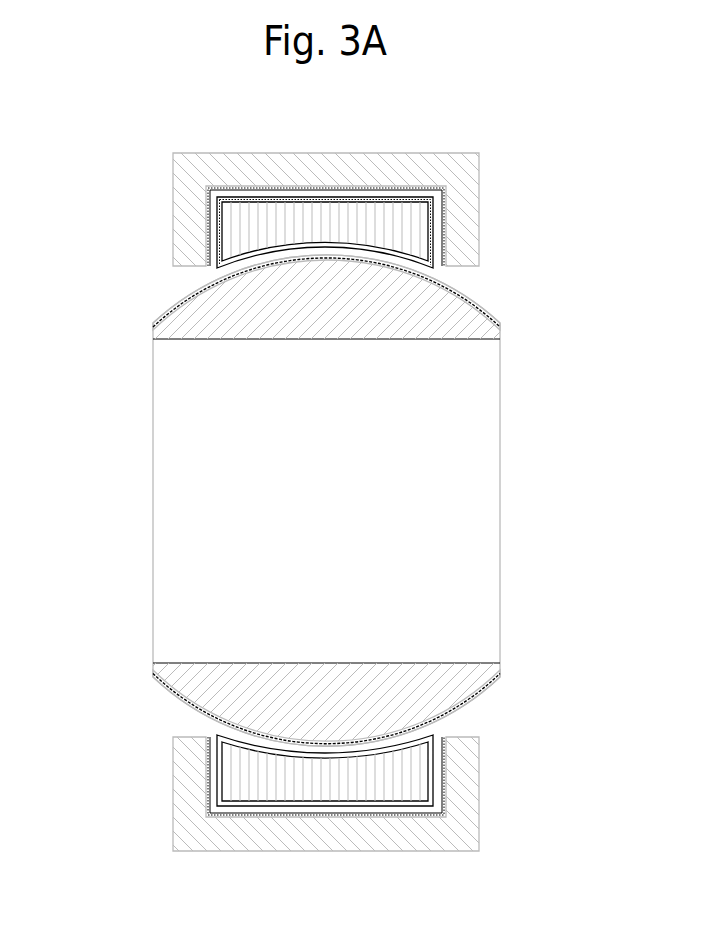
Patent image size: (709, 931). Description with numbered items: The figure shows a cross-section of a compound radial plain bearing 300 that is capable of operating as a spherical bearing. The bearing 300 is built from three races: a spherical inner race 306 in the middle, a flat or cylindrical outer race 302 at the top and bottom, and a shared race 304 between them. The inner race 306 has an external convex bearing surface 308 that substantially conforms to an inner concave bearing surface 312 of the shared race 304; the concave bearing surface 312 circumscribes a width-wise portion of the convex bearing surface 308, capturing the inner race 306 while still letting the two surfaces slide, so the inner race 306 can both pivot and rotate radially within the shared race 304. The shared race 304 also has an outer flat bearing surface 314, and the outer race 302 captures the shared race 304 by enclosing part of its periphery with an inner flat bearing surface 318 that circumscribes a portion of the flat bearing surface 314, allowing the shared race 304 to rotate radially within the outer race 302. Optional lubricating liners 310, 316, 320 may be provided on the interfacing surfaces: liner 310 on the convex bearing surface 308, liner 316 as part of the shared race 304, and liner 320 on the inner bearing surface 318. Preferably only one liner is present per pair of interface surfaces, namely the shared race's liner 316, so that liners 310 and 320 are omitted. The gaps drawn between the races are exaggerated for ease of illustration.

The compound radial plain bearing 300 is at (503, 137).
The outer race 302 is at (173, 200).
The shared race 304 is at (217, 266).
The spherical inner race 306 is at (153, 392).
The external convex bearing surface 308 is at (321, 271).
The lubricating liner 310 is at (468, 703).
The inner concave bearing surface 312 is at (393, 239).
The outer flat bearing surface 314 is at (278, 215).
The lubricating liner 316 is at (430, 268).
The inner flat bearing surface 318 is at (270, 174).
The lubricating liner 320 is at (334, 190).